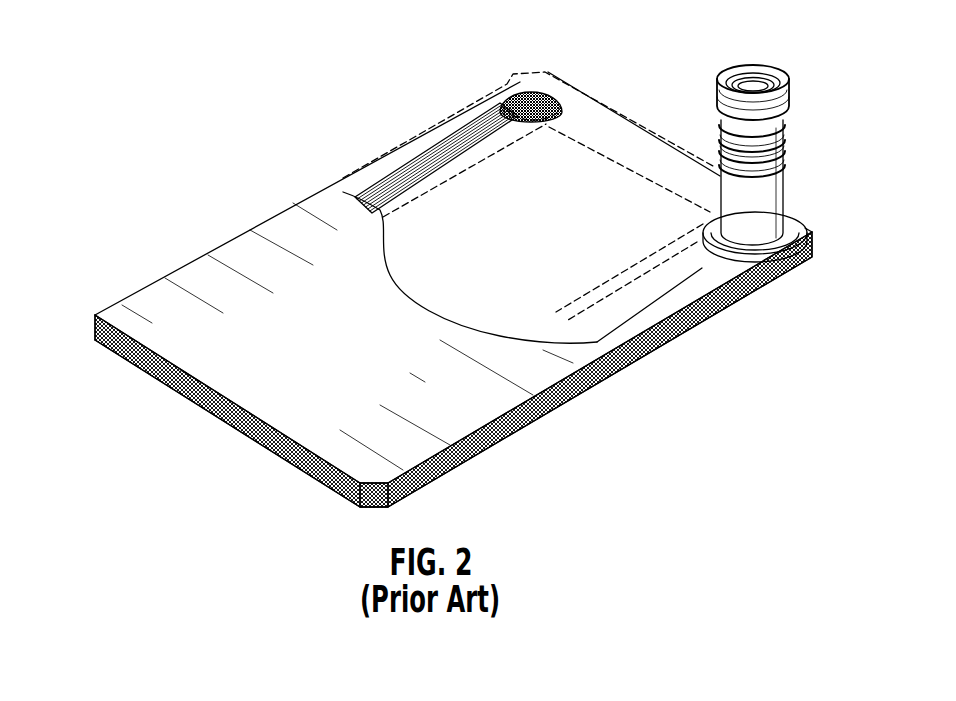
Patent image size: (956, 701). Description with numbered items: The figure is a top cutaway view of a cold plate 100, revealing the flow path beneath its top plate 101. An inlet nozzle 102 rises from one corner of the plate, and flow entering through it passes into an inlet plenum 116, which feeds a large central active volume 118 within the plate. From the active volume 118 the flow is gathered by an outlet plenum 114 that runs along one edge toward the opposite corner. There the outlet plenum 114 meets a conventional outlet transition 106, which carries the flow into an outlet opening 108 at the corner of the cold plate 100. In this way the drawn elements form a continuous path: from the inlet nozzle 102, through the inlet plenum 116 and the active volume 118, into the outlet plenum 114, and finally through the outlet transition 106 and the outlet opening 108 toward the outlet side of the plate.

The cold plate 100 is at (442, 263).
The top plate 101 is at (383, 335).
The inlet nozzle 102 is at (708, 115).
The outlet transition 106 is at (506, 96).
The outlet opening 108 is at (523, 85).
The outlet plenum 114 is at (414, 190).
The inlet plenum 116 is at (640, 325).
The active volume 118 is at (545, 248).